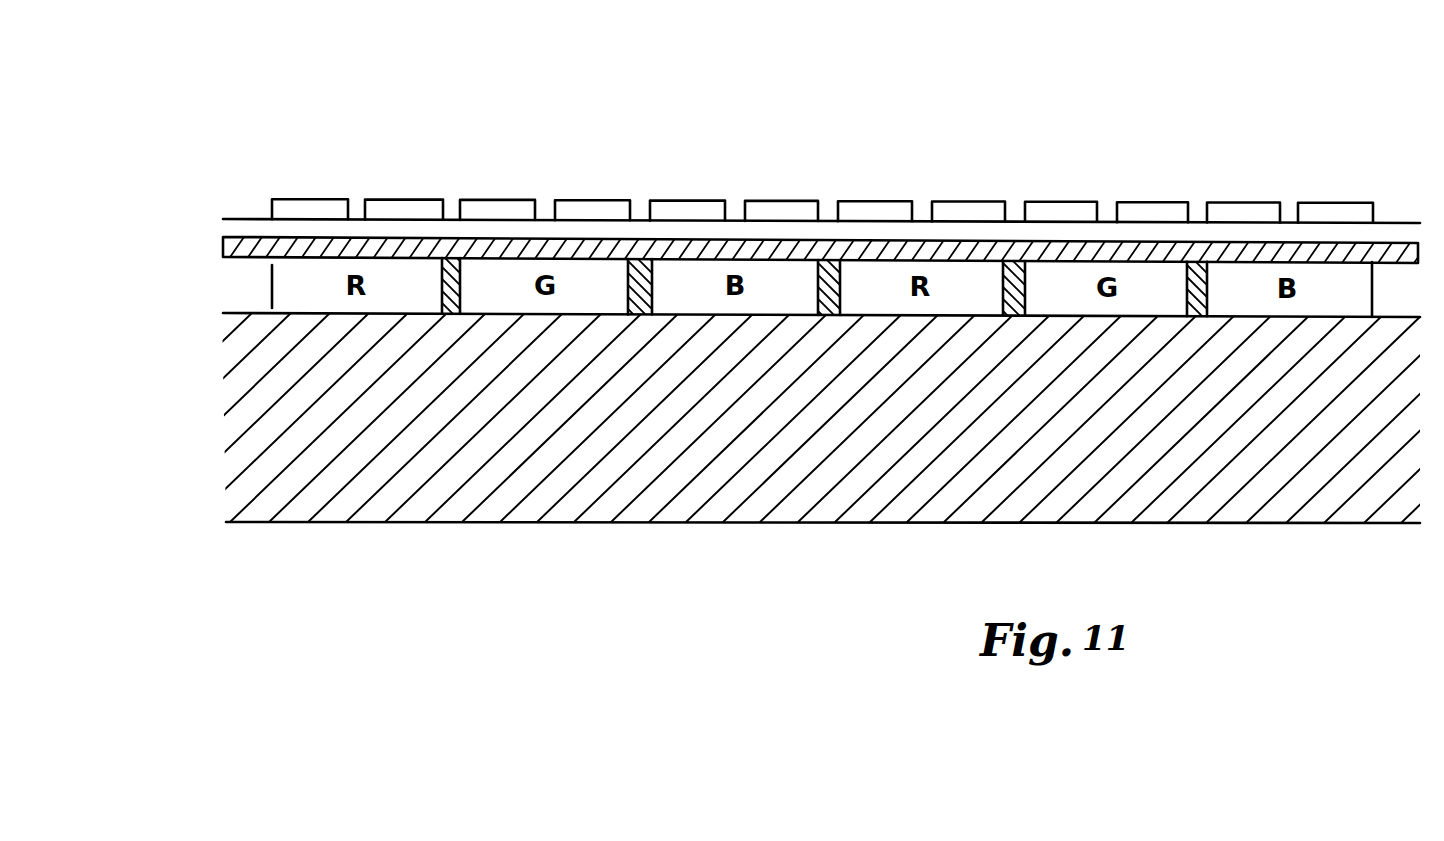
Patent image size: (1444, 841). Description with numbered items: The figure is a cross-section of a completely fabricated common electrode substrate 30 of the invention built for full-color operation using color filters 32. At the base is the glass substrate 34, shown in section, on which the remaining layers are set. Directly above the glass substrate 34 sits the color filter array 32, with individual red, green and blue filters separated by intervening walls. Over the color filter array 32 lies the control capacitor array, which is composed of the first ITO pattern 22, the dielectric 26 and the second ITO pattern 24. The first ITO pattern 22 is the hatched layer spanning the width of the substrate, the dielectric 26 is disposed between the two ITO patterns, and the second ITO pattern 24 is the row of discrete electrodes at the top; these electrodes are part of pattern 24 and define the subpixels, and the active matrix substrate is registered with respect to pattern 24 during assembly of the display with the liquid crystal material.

The first ITO pattern 22 is at (222, 255).
The second ITO pattern 24 is at (769, 199).
The dielectric 26 is at (222, 222).
The common electrode substrate 30 is at (1058, 145).
The color filters 32 is at (673, 312).
The glass substrate 34 is at (852, 423).